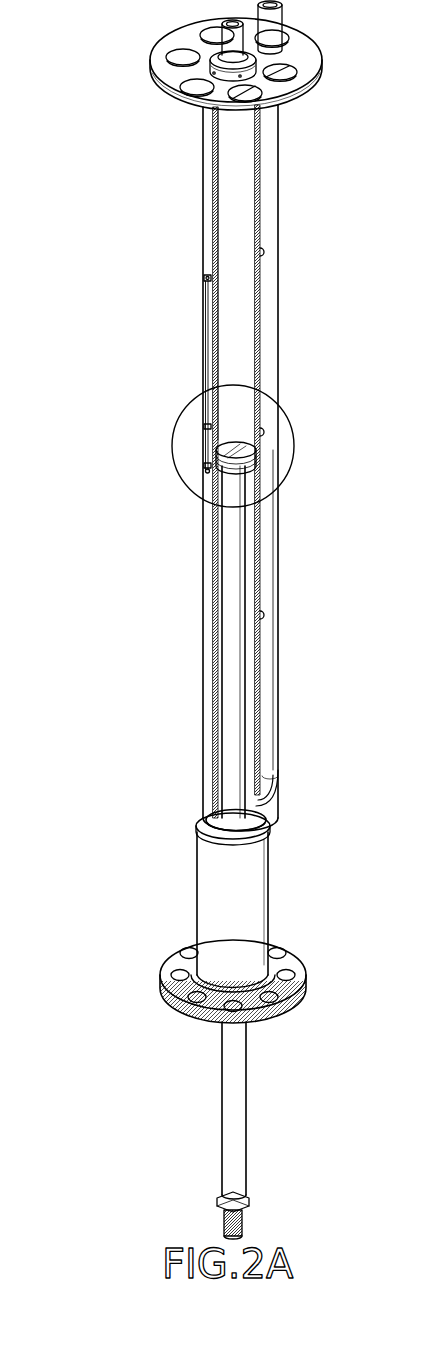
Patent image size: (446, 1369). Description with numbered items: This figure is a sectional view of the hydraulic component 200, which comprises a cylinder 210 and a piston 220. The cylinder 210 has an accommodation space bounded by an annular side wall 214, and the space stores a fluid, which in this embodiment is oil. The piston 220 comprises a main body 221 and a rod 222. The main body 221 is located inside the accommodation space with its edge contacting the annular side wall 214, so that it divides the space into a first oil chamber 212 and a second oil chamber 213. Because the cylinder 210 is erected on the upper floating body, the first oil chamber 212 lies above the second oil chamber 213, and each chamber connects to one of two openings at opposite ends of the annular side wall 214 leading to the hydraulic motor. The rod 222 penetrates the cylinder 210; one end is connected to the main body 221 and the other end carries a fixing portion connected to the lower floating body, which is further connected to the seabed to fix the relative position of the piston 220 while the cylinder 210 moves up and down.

The hydraulic component 200 is at (77, 37).
The cylinder 210 is at (203, 228).
The first oil chamber 212 is at (243, 283).
The second oil chamber 213 is at (247, 712).
The annular side wall 214 is at (262, 205).
The piston 220 is at (247, 1151).
The main body 221 is at (247, 468).
The rod 222 is at (236, 646).